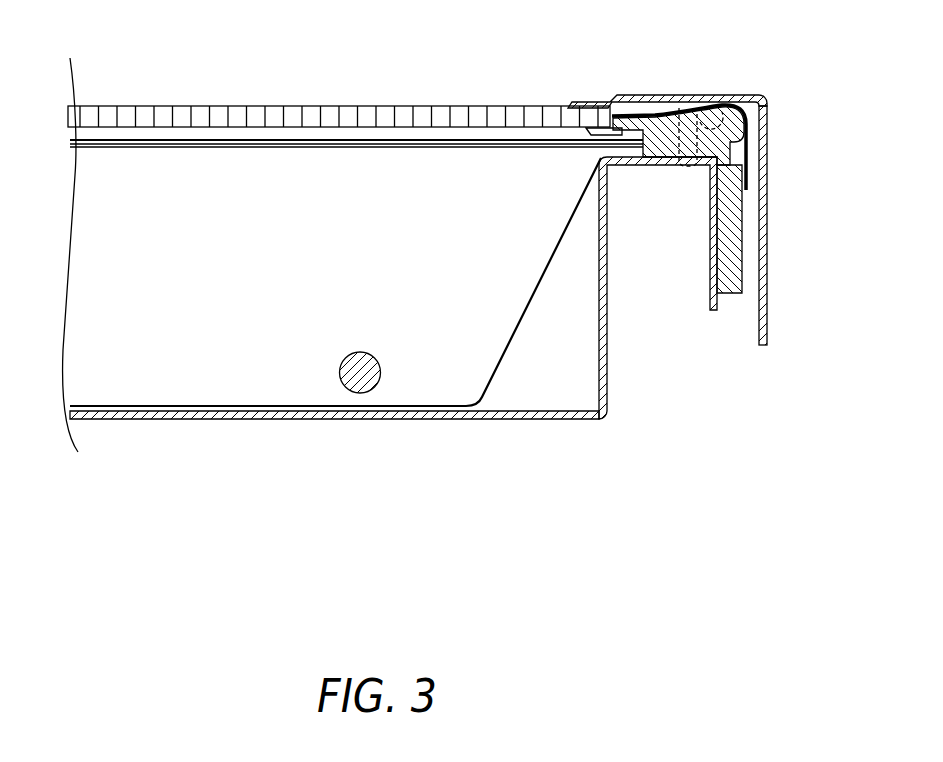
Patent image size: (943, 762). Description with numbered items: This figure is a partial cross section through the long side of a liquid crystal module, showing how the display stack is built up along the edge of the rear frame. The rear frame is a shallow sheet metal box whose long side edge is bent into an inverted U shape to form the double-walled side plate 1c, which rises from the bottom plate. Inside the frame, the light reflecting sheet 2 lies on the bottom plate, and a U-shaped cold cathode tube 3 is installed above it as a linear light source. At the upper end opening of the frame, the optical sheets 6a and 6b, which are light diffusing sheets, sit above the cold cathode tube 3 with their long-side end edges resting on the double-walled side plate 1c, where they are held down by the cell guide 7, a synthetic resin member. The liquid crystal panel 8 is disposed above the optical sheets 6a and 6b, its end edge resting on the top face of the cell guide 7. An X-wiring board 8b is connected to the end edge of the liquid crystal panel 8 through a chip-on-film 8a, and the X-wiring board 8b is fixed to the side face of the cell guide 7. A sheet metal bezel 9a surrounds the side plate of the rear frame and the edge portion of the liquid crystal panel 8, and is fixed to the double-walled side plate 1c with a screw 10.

The double-walled side plate 1c is at (607, 318).
The light reflecting sheet 2 is at (517, 317).
The U-shaped cold cathode tube 3 is at (357, 393).
The optical sheet 6a is at (333, 148).
The optical sheet 6b is at (368, 139).
The cell guide 7 is at (651, 140).
The liquid crystal panel 8 is at (295, 105).
The chip-on-film 8a is at (748, 137).
The X-wiring board 8b is at (743, 243).
The bezel 9a is at (646, 95).
The screw 10 is at (718, 99).